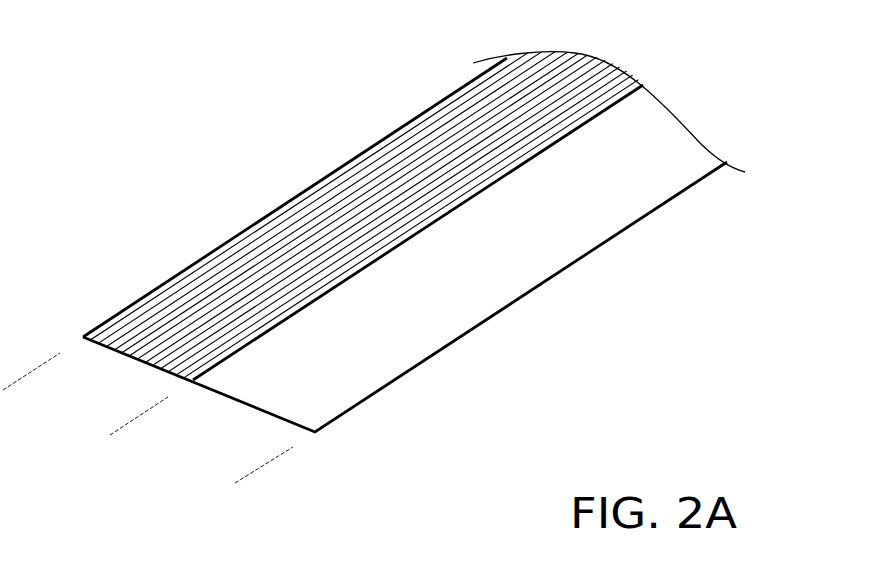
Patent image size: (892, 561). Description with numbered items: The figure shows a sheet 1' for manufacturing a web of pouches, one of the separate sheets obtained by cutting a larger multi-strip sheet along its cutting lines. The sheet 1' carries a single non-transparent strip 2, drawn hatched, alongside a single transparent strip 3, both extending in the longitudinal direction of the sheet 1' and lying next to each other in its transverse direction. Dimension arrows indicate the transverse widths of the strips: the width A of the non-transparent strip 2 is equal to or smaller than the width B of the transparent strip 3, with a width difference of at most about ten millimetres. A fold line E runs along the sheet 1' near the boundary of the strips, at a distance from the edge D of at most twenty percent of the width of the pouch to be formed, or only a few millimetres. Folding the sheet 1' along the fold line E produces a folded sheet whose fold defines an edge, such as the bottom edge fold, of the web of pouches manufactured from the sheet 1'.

The sheet 1' is at (405, 239).
The non-transparent strip 2 is at (143, 296).
The transparent strip 3 is at (683, 143).
The edge D is at (275, 323).
The fold line E is at (303, 313).
The width of non-transparent strip A is at (45, 377).
The width of transparent strip B is at (155, 420).